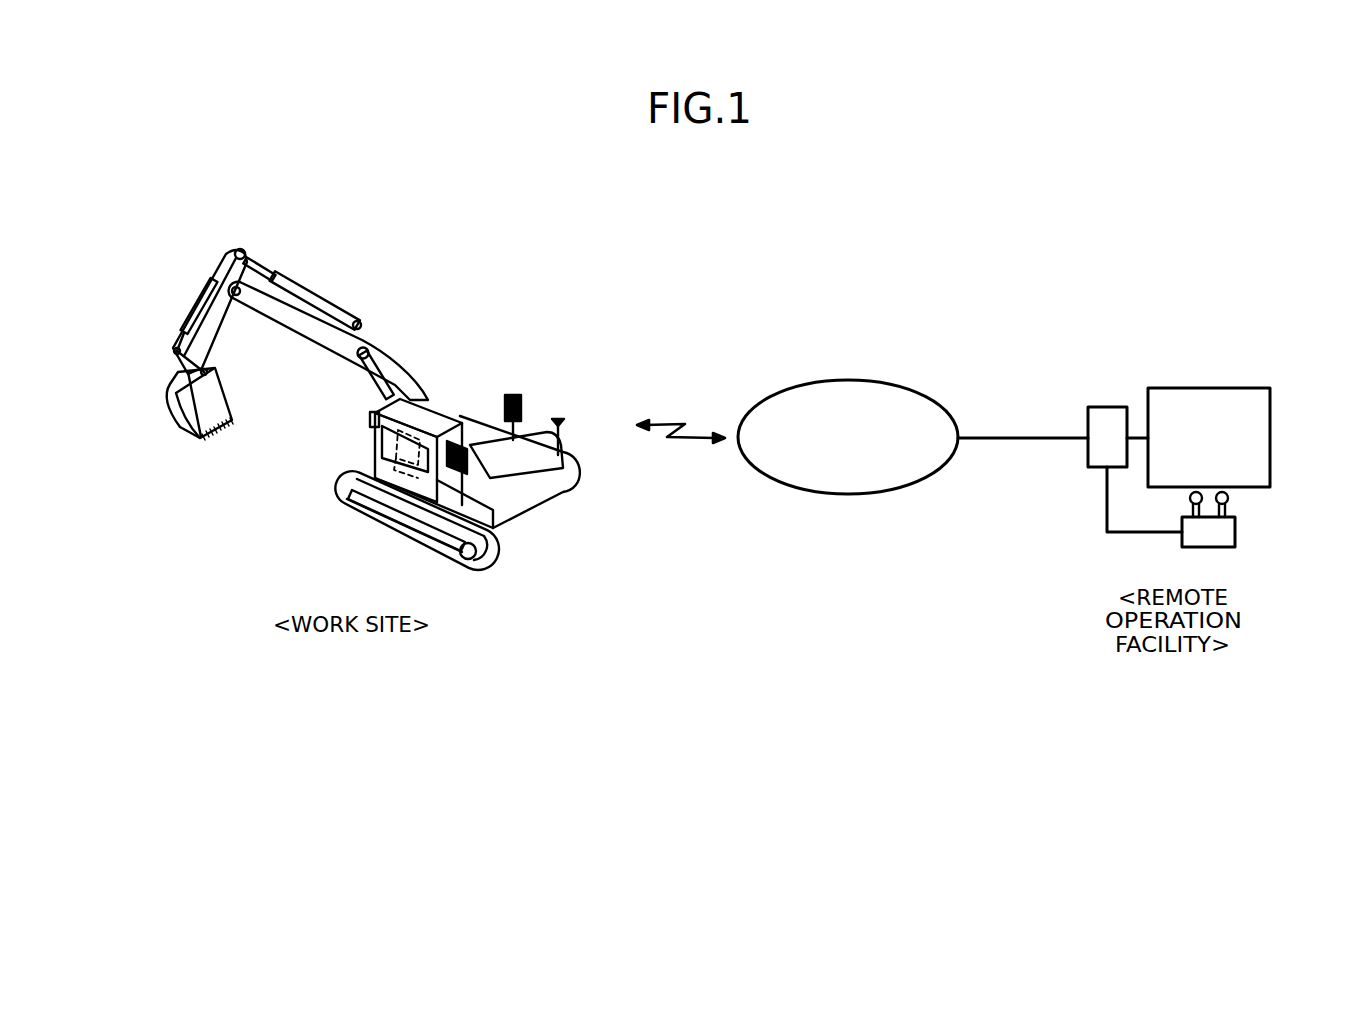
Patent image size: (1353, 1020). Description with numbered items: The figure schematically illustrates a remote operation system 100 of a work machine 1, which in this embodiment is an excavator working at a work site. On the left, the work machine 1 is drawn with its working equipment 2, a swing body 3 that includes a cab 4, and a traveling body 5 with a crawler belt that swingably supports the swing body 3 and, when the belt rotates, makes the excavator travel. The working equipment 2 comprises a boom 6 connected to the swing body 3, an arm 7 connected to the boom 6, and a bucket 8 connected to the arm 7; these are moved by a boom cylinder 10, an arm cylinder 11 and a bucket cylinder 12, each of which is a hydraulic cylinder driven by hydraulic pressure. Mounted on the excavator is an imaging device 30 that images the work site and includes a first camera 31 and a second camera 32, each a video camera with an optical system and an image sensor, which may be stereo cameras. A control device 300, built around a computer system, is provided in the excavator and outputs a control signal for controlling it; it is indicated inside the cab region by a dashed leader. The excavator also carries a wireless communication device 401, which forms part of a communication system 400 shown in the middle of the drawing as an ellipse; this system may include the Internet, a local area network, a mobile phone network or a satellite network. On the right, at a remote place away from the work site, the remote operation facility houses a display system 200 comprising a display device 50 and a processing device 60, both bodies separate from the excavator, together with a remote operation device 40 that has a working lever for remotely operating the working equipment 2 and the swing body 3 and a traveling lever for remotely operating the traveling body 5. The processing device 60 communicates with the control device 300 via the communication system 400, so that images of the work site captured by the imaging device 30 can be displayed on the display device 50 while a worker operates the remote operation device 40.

The work machine 1 is at (309, 243).
The working equipment 2 is at (210, 265).
The swing body 3 is at (488, 402).
The cab 4 is at (441, 402).
The traveling body 5 is at (328, 511).
The boom 6 is at (371, 317).
The arm 7 is at (213, 330).
The bucket 8 is at (180, 430).
The boom cylinder 10 is at (430, 392).
The arm cylinder 11 is at (313, 300).
The bucket cylinder 12 is at (203, 298).
The imaging device 30 is at (293, 373).
The first camera 31 is at (371, 419).
The second camera 32 is at (380, 385).
The control device 300 is at (392, 452).
The communication system 400 is at (846, 381).
The wireless communication device 401 is at (566, 420).
The remote operation system 100 is at (1211, 236).
The display system 200 is at (1156, 353).
The display device 50 is at (1206, 388).
The processing device 60 is at (1106, 407).
The remote operation device 40 is at (1236, 530).